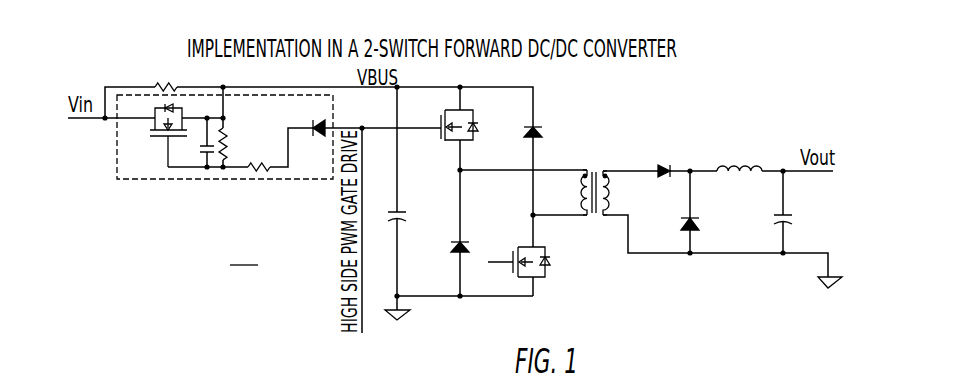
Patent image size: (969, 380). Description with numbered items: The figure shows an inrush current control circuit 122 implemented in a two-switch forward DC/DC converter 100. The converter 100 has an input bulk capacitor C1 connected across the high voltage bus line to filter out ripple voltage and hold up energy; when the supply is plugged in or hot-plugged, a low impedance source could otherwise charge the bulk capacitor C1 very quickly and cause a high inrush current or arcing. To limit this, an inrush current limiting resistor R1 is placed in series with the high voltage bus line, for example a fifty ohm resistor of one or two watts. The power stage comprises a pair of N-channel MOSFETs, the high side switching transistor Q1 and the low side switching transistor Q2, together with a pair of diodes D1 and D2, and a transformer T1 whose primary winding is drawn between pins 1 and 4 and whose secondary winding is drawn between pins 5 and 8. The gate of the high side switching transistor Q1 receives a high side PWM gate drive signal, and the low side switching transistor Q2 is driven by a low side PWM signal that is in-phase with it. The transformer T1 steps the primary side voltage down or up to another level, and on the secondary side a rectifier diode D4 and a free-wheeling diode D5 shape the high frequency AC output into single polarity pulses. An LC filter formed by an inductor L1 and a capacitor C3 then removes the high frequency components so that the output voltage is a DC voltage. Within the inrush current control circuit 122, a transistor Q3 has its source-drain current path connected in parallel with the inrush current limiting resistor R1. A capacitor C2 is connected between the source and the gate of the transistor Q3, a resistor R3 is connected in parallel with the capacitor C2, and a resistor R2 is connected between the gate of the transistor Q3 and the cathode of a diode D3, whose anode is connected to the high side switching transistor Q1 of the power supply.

The two-switch forward DC/DC converter 100 is at (244, 254).
The inrush current control circuit 122 is at (193, 180).
The inrush current limiting resistor R1 is at (177, 77).
The resistor R2 is at (263, 156).
The resistor R3 is at (234, 141).
The input bulk capacitor C1 is at (405, 204).
The capacitor C2 is at (199, 137).
The capacitor C3 is at (798, 220).
The diode D1 is at (473, 238).
The diode D2 is at (546, 127).
The diode D3 is at (308, 118).
The rectifier diode D4 is at (665, 156).
The free-wheeling diode D5 is at (704, 220).
The high side switching transistor Q1 is at (465, 139).
The low side switching transistor Q2 is at (526, 279).
The transistor Q3 is at (152, 135).
The transformer T1 is at (596, 175).
The inductor L1 is at (739, 150).
The transformer primary pin 1 is at (580, 156).
The transformer primary pin 4 is at (577, 202).
The transformer secondary pin 5 is at (614, 156).
The transformer secondary pin 8 is at (614, 202).